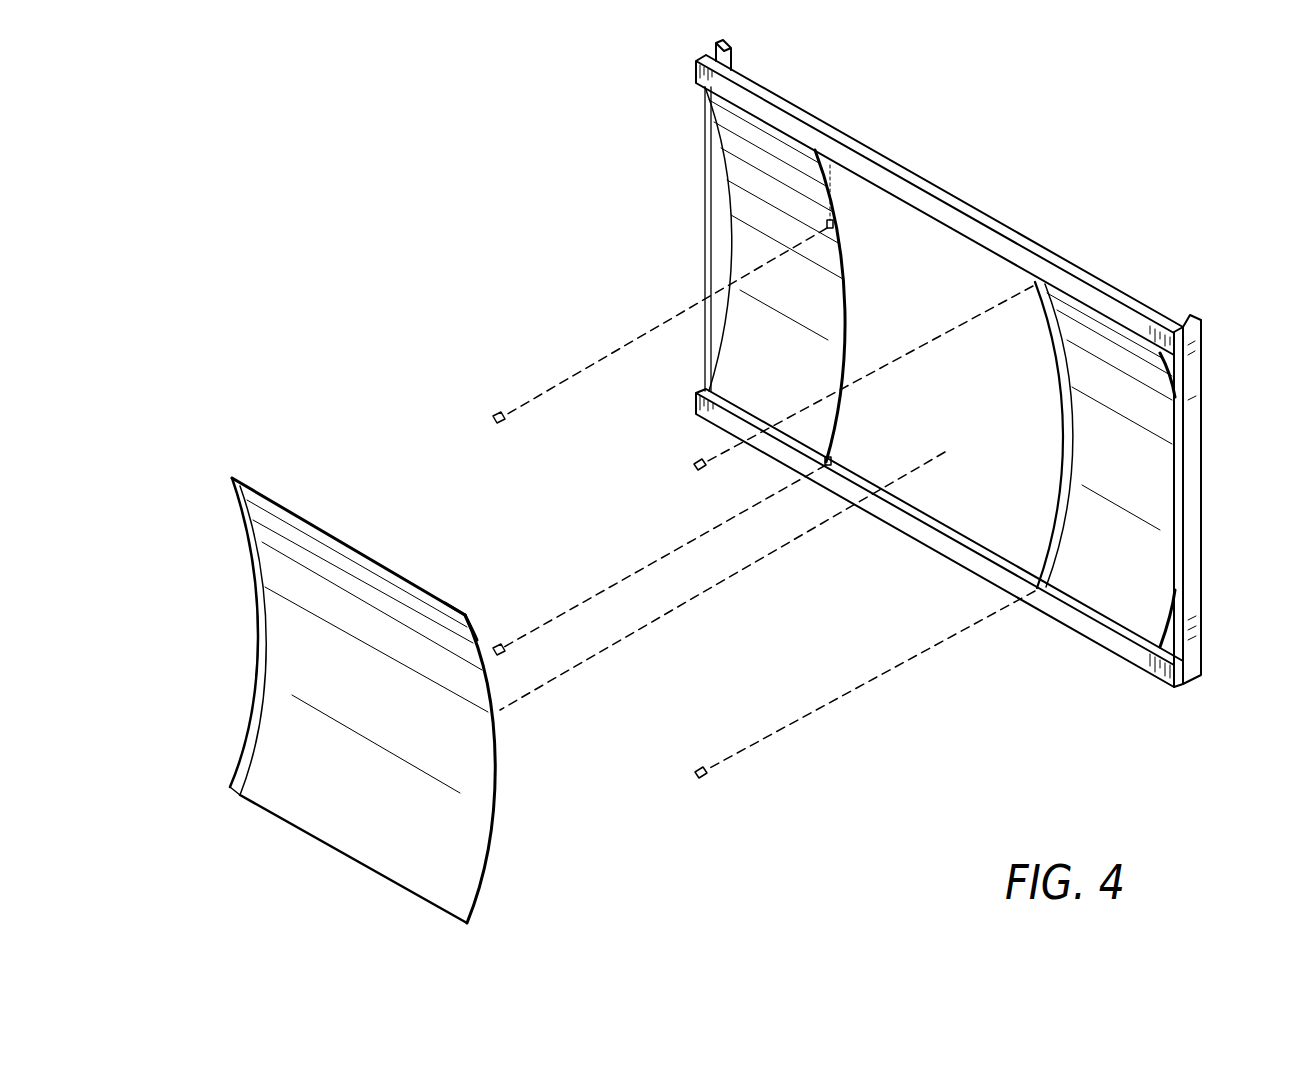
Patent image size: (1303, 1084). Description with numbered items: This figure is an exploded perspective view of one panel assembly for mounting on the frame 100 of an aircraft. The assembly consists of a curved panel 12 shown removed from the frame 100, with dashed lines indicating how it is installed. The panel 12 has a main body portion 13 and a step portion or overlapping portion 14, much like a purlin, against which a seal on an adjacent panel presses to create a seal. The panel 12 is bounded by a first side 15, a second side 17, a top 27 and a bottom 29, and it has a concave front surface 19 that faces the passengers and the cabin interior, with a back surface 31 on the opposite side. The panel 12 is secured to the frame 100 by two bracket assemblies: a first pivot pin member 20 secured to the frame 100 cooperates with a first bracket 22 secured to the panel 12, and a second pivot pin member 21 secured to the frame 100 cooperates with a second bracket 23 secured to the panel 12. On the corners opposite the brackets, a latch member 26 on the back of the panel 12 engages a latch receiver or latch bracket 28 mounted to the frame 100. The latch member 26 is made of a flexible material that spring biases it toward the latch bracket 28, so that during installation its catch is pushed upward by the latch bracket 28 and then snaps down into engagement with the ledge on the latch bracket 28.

The frame 100 is at (1188, 363).
The panel 12 is at (672, 526).
The main body portion 13 is at (425, 880).
The overlapping portion 14 is at (257, 608).
The first side 15 is at (250, 716).
The second side 17 is at (503, 760).
The front surface 19 is at (367, 716).
The first pivot pin member 20 is at (827, 224).
The second pivot pin member 21 is at (829, 459).
The first bracket 22 is at (499, 413).
The second bracket 23 is at (499, 644).
The latch member 26 is at (457, 608).
The top 27 is at (360, 550).
The latch bracket 28 is at (695, 463).
The bottom 29 is at (348, 853).
The back surface 31 is at (522, 820).